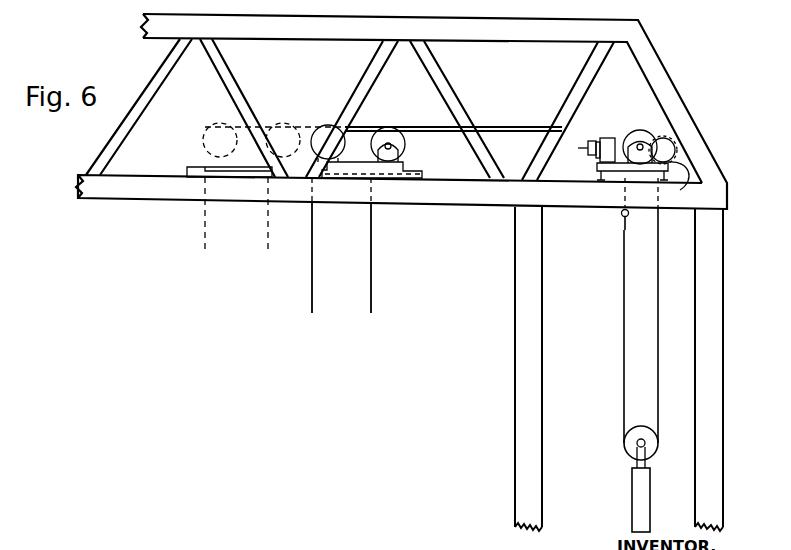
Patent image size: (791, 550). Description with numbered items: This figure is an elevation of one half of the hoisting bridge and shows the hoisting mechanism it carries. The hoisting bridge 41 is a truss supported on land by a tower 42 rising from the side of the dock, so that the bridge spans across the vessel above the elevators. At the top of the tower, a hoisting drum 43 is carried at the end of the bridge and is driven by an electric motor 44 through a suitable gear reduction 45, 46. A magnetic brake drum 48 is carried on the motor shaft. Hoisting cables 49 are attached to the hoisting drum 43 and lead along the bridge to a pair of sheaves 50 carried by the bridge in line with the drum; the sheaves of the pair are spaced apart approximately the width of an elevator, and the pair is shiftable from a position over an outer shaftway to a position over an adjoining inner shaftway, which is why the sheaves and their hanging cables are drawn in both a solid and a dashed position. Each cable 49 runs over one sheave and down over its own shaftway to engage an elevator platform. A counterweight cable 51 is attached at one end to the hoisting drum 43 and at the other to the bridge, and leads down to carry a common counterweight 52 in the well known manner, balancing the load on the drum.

The hoisting bridge 41 is at (661, 77).
The tower 42 is at (515, 307).
The hoisting drum 43 is at (640, 133).
The electric motor 44 is at (608, 138).
The gear reduction 45 is at (680, 190).
The gear reduction 46 is at (655, 135).
The magnetic brake drum 48 is at (592, 145).
The hoisting cable 49 is at (512, 127).
The sheave 50 is at (241, 122).
The counterweight cable 51 is at (623, 312).
The counterweight 52 is at (632, 486).